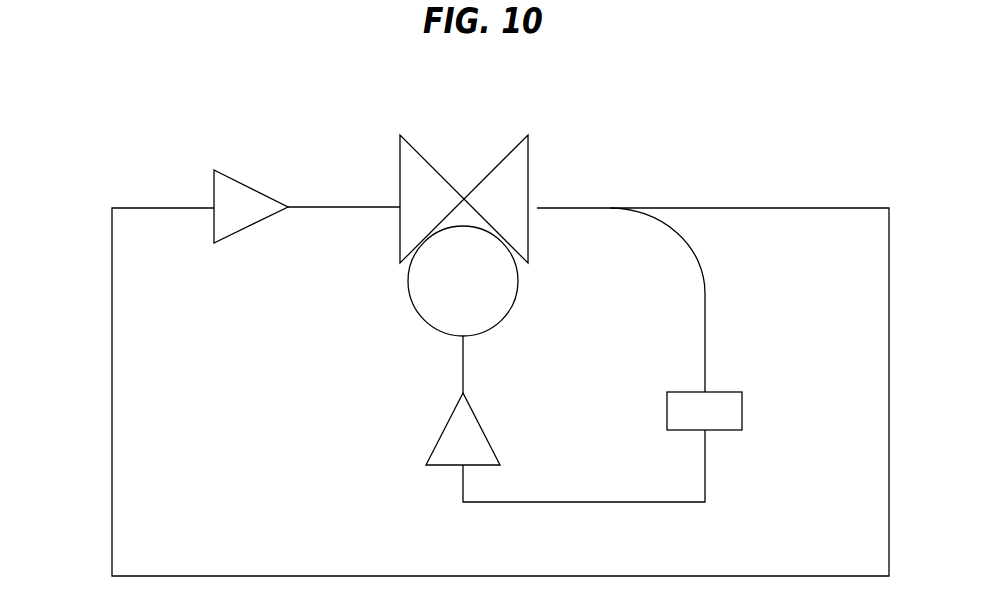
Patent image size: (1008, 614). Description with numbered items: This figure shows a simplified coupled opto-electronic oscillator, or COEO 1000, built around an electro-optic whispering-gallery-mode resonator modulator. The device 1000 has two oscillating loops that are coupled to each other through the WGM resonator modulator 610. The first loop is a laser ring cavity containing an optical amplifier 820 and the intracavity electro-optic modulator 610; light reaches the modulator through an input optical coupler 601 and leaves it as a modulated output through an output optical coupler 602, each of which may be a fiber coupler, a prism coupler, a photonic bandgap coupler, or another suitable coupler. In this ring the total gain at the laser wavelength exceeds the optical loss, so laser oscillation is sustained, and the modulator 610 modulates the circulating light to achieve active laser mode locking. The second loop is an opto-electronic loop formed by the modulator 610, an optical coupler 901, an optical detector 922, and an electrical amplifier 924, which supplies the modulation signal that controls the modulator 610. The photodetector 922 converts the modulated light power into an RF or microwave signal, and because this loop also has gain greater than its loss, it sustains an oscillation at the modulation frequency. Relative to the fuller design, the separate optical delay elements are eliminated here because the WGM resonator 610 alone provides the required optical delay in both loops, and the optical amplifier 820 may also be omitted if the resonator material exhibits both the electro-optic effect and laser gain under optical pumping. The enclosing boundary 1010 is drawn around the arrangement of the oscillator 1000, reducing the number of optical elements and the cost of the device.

The simplified COEO 1000 is at (261, 76).
The enclosure / loop boundary 1010 is at (112, 427).
The optical amplifier 820 is at (250, 226).
The input optical coupler 601 is at (398, 170).
The output optical coupler 602 is at (518, 170).
The WGM resonator modulator 610 is at (485, 296).
The optical coupler 901 is at (612, 210).
The optical detector 922 is at (742, 412).
The electrical amplifier 924 is at (447, 426).